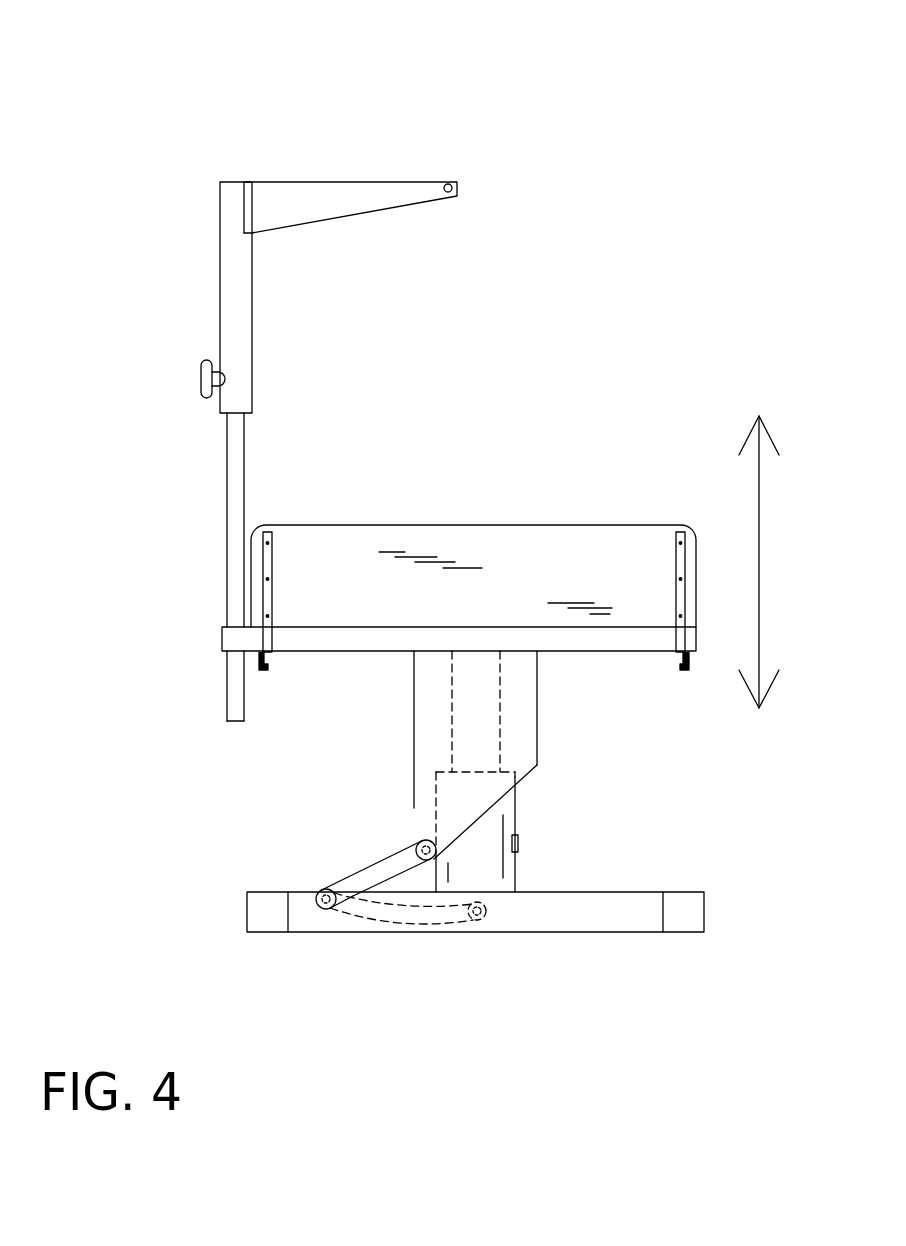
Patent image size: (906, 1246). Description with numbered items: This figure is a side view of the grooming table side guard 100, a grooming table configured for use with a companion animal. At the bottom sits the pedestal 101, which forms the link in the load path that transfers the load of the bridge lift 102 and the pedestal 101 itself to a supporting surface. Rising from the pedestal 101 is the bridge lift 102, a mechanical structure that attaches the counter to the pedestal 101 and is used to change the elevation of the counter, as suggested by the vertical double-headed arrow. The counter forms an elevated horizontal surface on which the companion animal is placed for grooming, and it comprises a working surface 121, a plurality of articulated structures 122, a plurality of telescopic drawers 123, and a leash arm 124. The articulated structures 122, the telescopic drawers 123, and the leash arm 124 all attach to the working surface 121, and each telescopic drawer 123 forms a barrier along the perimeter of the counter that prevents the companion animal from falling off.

The grooming table side guard 100 is at (147, 86).
The pedestal 101 is at (635, 892).
The bridge lift 102 is at (528, 814).
The working surface 121 is at (620, 645).
The plurality of articulated structures 122 is at (383, 873).
The plurality of telescopic drawers 123 is at (575, 545).
The leash arm 124 is at (222, 292).